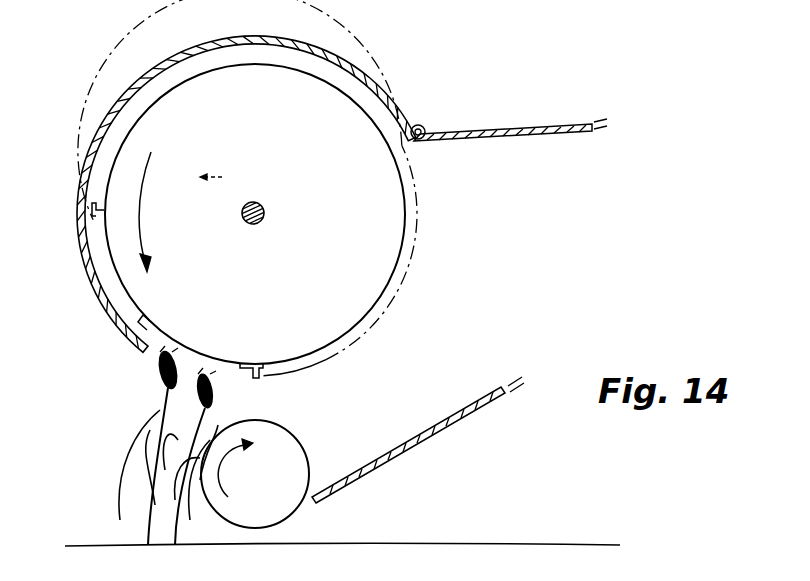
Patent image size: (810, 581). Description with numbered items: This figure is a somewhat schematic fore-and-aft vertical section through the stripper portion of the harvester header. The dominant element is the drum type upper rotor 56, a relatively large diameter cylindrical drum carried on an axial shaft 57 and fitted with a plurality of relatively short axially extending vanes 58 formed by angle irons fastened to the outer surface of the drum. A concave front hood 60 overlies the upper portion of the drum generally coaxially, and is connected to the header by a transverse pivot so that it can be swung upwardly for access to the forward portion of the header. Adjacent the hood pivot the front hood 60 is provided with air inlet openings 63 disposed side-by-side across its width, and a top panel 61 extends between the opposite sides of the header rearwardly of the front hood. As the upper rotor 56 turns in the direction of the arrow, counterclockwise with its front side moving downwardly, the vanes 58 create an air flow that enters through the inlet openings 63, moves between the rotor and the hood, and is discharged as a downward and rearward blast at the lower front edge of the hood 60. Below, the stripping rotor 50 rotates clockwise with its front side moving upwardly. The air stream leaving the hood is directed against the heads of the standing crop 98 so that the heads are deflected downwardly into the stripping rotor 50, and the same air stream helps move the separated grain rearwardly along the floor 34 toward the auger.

The floor 34 is at (376, 460).
The stripping rotor 50 is at (287, 429).
The upper rotor 56 is at (312, 97).
The axial shaft 57 is at (264, 208).
The vanes 58 is at (78, 241).
The front hood 60 is at (293, 40).
The top panel 61 is at (490, 128).
The air inlet openings 63 is at (399, 89).
The standing crop 98 is at (192, 408).